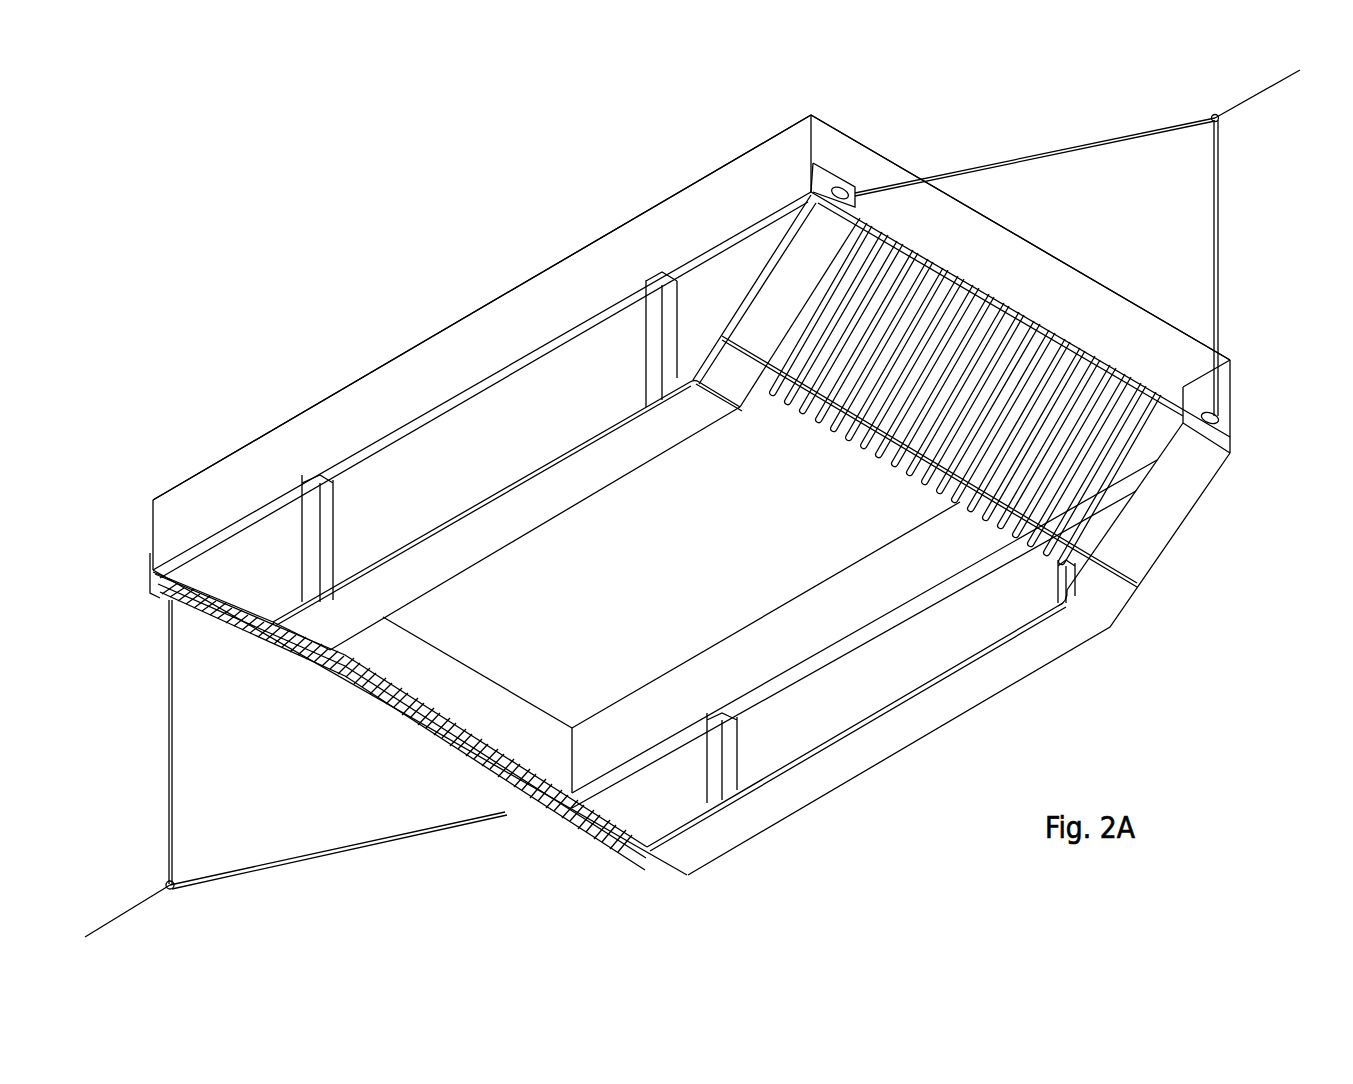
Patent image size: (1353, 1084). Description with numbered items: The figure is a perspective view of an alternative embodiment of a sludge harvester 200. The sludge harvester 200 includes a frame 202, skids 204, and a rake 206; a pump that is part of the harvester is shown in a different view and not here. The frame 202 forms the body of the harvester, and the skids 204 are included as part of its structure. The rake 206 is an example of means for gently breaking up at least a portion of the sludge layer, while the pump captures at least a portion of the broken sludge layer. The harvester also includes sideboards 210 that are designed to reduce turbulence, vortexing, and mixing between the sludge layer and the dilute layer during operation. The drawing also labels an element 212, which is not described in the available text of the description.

The sludge harvester 200 is at (490, 240).
The frame 202 is at (375, 362).
The skids 204 is at (540, 505).
The rake 206 is at (1085, 448).
The sideboards 210 is at (720, 202).
The suspension cable 212 is at (1268, 108).